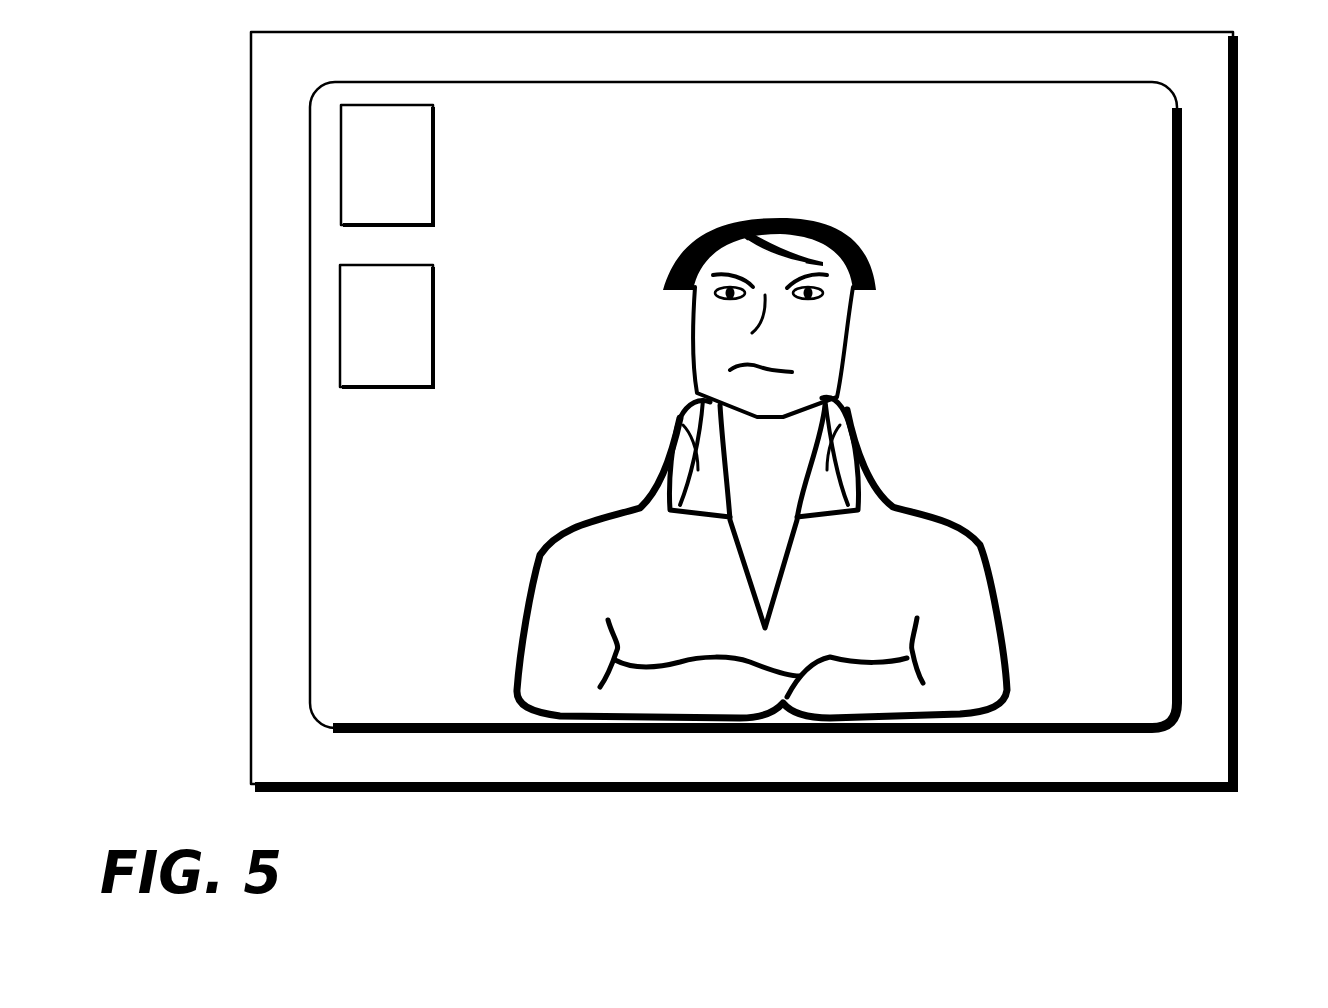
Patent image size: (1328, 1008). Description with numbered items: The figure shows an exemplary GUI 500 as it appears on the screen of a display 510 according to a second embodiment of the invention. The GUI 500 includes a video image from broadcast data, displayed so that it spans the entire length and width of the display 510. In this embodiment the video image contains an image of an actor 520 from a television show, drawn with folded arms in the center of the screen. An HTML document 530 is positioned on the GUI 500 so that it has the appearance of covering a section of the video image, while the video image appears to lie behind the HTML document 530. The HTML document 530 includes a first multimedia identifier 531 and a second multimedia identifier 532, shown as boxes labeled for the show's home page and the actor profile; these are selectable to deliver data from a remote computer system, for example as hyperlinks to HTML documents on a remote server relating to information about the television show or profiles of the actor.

The GUI 500 is at (1148, 557).
The display 510 is at (1198, 275).
The actor 520 is at (913, 510).
The HTML document 530 is at (550, 245).
The first multimedia identifier 531 is at (434, 207).
The second multimedia identifier 532 is at (392, 373).